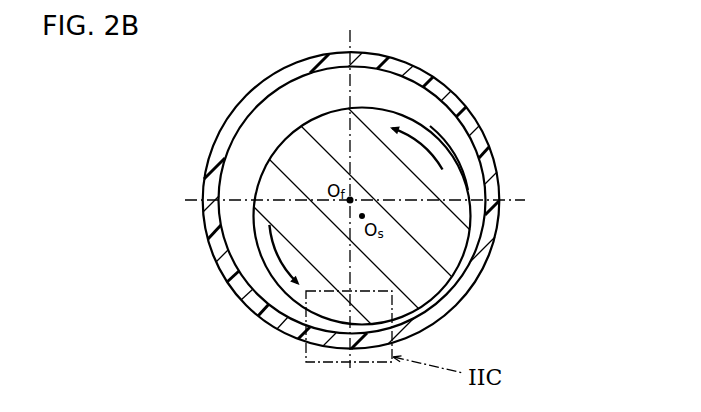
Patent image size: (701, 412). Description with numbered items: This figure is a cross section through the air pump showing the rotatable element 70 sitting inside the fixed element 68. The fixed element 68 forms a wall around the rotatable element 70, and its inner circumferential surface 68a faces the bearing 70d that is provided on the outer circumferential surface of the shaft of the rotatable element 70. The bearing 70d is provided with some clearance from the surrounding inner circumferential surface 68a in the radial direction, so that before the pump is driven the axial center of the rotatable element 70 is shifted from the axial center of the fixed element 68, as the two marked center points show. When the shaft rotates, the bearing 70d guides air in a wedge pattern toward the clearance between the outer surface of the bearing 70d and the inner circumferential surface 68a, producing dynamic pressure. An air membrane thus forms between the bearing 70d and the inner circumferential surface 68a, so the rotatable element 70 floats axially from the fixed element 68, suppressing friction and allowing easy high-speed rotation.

The fixed element 68 is at (290, 76).
The inner circumferential surface 68a is at (220, 136).
The rotatable element 70 is at (390, 110).
The bearing 70d is at (460, 152).